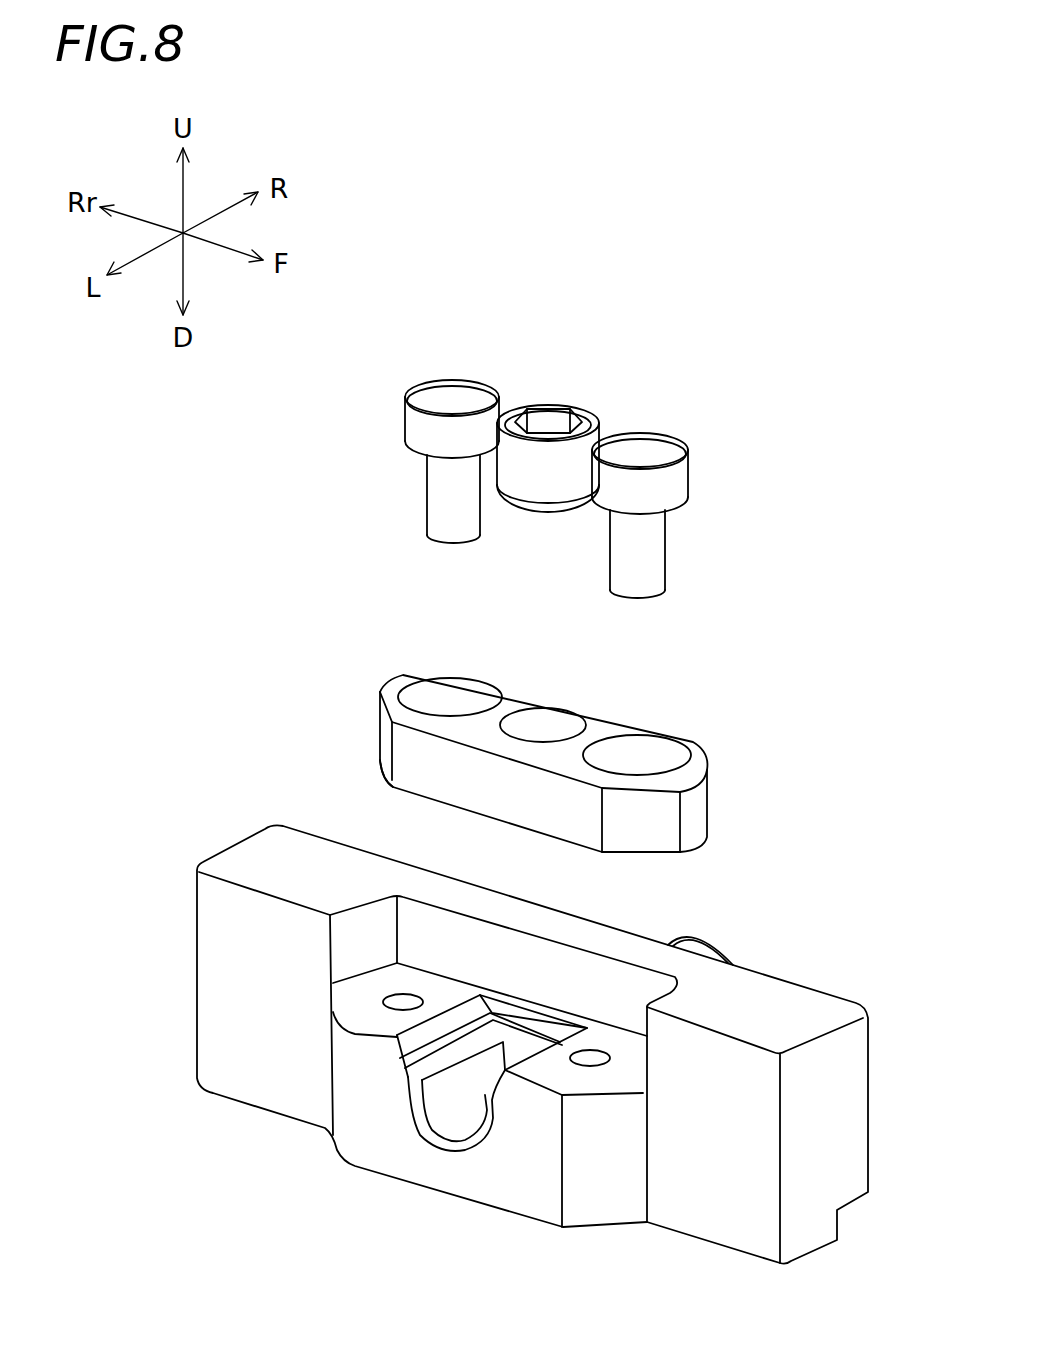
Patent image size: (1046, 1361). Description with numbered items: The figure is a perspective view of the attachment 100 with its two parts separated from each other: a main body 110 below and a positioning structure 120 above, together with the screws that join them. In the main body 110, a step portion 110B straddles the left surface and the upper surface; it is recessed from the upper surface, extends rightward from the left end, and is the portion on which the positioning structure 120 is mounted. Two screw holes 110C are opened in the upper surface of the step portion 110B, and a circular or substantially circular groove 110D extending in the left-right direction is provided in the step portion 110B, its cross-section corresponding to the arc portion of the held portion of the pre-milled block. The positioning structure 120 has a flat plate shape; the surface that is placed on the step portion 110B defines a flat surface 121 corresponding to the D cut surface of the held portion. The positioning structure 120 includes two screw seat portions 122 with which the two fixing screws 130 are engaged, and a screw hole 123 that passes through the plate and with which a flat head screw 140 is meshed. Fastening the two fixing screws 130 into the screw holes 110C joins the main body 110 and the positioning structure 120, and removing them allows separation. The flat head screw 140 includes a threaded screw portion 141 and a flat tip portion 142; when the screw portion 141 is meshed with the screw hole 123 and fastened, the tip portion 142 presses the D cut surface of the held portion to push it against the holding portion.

The attachment 100 is at (773, 640).
The main body 110 is at (532, 1024).
The step portion 110B is at (627, 1055).
The screw holes 110C is at (380, 997).
The circular groove 110D is at (458, 1115).
The positioning structure 120 is at (555, 738).
The flat surface 121 is at (420, 799).
The screw seat portions 122 is at (432, 682).
The screw hole 123 is at (535, 718).
The fixing screws 130 is at (455, 398).
The flat head screw 140 is at (531, 433).
The screw portion 141 is at (511, 467).
The tip portion 142 is at (542, 512).